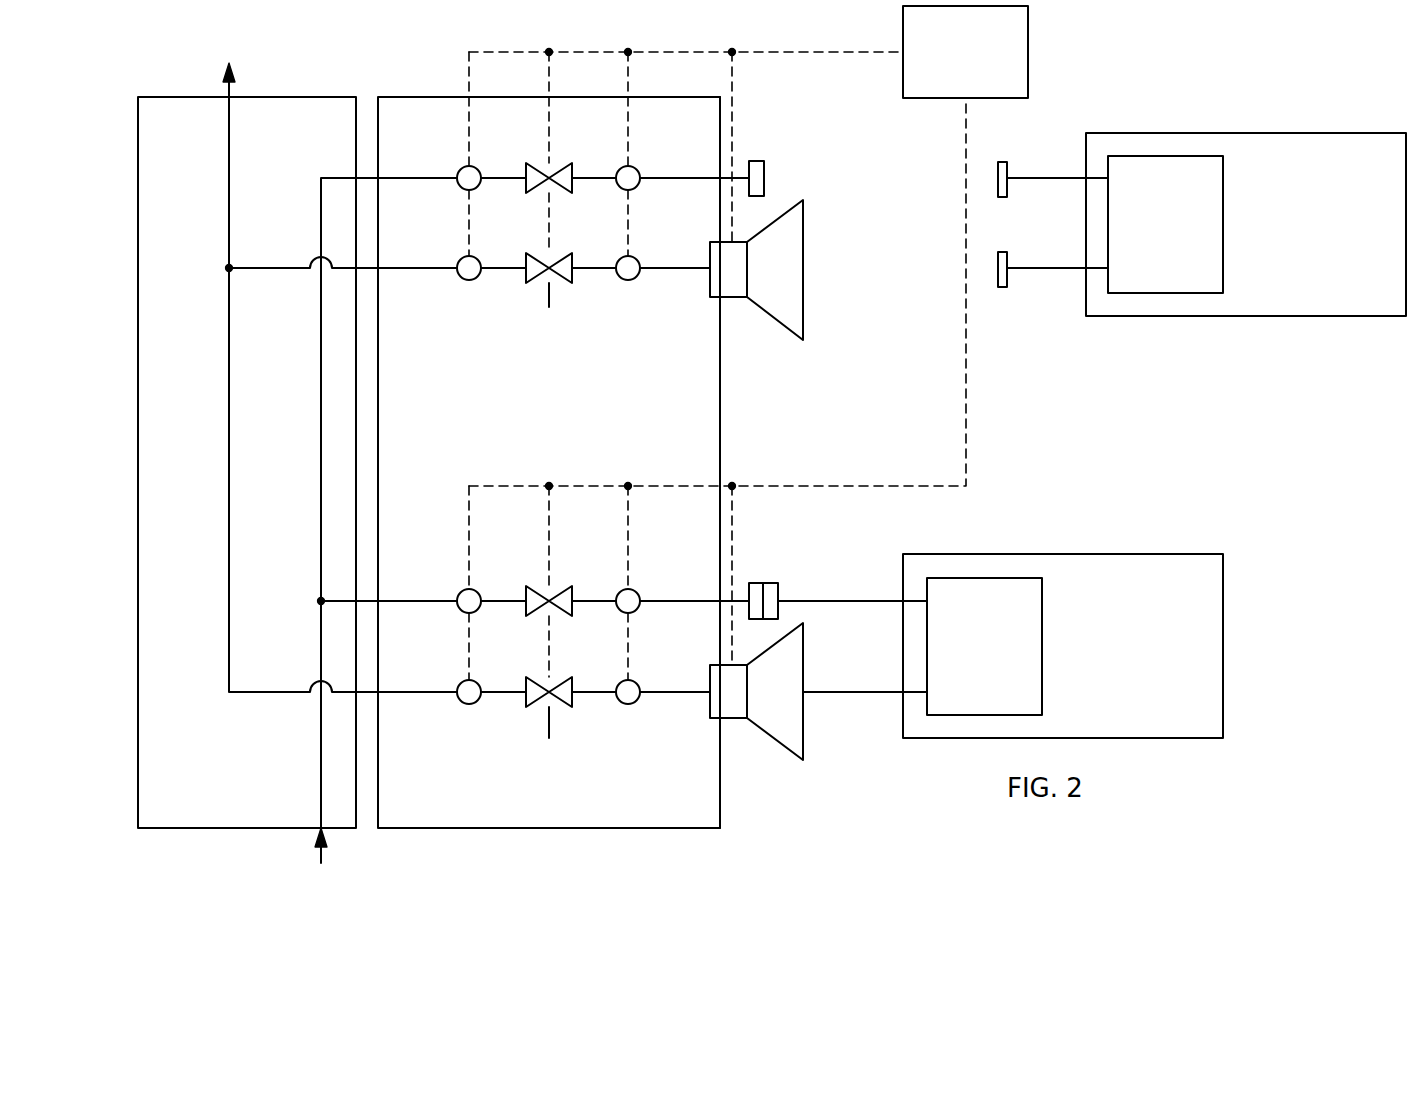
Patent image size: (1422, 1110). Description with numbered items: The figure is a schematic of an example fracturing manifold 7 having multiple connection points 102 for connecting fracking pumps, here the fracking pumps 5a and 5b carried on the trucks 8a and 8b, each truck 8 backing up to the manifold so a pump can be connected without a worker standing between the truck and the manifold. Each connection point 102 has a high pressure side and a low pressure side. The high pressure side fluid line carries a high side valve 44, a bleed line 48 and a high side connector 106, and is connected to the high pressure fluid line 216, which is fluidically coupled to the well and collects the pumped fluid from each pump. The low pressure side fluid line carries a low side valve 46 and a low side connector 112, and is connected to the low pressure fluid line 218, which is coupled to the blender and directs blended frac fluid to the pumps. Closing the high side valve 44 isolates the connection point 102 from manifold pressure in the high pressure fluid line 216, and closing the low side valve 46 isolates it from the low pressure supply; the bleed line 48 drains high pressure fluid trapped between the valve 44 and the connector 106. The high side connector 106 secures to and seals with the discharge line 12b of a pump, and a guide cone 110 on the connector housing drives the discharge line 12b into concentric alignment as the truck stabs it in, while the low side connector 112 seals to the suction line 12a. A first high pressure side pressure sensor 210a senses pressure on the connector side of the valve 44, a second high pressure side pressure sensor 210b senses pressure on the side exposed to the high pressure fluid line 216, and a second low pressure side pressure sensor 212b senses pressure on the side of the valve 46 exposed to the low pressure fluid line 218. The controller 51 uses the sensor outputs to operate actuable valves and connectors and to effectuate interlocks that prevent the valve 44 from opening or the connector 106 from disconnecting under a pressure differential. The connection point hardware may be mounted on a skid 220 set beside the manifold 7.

The fracturing manifold 7 is at (128, 592).
The truck 8 is at (1155, 428).
The truck 8a is at (1245, 133).
The truck 8b is at (1225, 650).
The fracking pump 5a is at (1225, 222).
The fracking pump 5b is at (1045, 648).
The suction line 12a is at (1037, 170).
The discharge line 12b is at (1037, 278).
The high side valve 44 is at (540, 260).
The low side valve 46 is at (558, 190).
The bleed line 48 is at (552, 305).
The controller 51 is at (950, 68).
The connection point 102 is at (446, 72).
The high side connector 106 is at (738, 300).
The guide cone 110 is at (805, 262).
The low side connector 112 is at (766, 172).
The first high pressure side pressure sensor 210a is at (637, 280).
The second high pressure side pressure sensor 210b is at (462, 280).
The second low pressure side pressure sensor 212b is at (462, 168).
The high pressure fluid line 216 is at (228, 383).
The low pressure fluid line 218 is at (320, 441).
The skid 220 is at (735, 402).